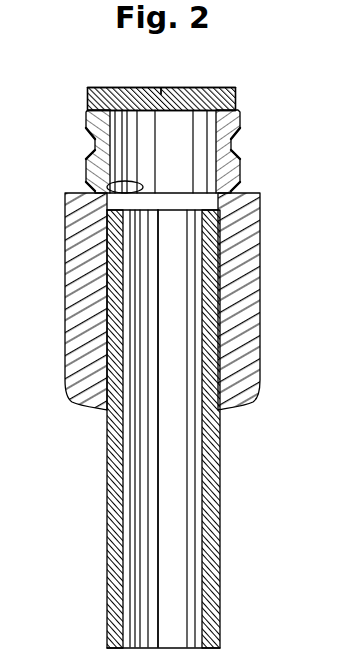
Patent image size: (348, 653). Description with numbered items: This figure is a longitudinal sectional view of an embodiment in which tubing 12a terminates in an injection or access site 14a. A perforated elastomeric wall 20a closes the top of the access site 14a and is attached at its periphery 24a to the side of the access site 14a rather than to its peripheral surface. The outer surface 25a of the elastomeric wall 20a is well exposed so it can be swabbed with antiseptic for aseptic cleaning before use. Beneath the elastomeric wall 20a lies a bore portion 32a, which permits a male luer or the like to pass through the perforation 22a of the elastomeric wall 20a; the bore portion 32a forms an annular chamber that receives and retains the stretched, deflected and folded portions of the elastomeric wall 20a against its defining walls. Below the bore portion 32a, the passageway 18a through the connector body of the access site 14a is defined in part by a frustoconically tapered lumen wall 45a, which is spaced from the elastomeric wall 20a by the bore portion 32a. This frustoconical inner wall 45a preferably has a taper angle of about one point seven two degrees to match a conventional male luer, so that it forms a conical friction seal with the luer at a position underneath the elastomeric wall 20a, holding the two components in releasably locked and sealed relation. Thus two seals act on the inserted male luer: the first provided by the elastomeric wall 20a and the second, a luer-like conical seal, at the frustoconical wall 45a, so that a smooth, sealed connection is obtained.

The tubing 12a is at (104, 497).
The access site 14a is at (261, 272).
The passageway 18a is at (177, 325).
The elastomeric wall 20a is at (235, 88).
The perforation 22a is at (180, 87).
The periphery 24a is at (237, 102).
The outer surface 25a is at (138, 87).
The bore portion 32a is at (187, 147).
The frustoconical inner wall 45a is at (100, 187).